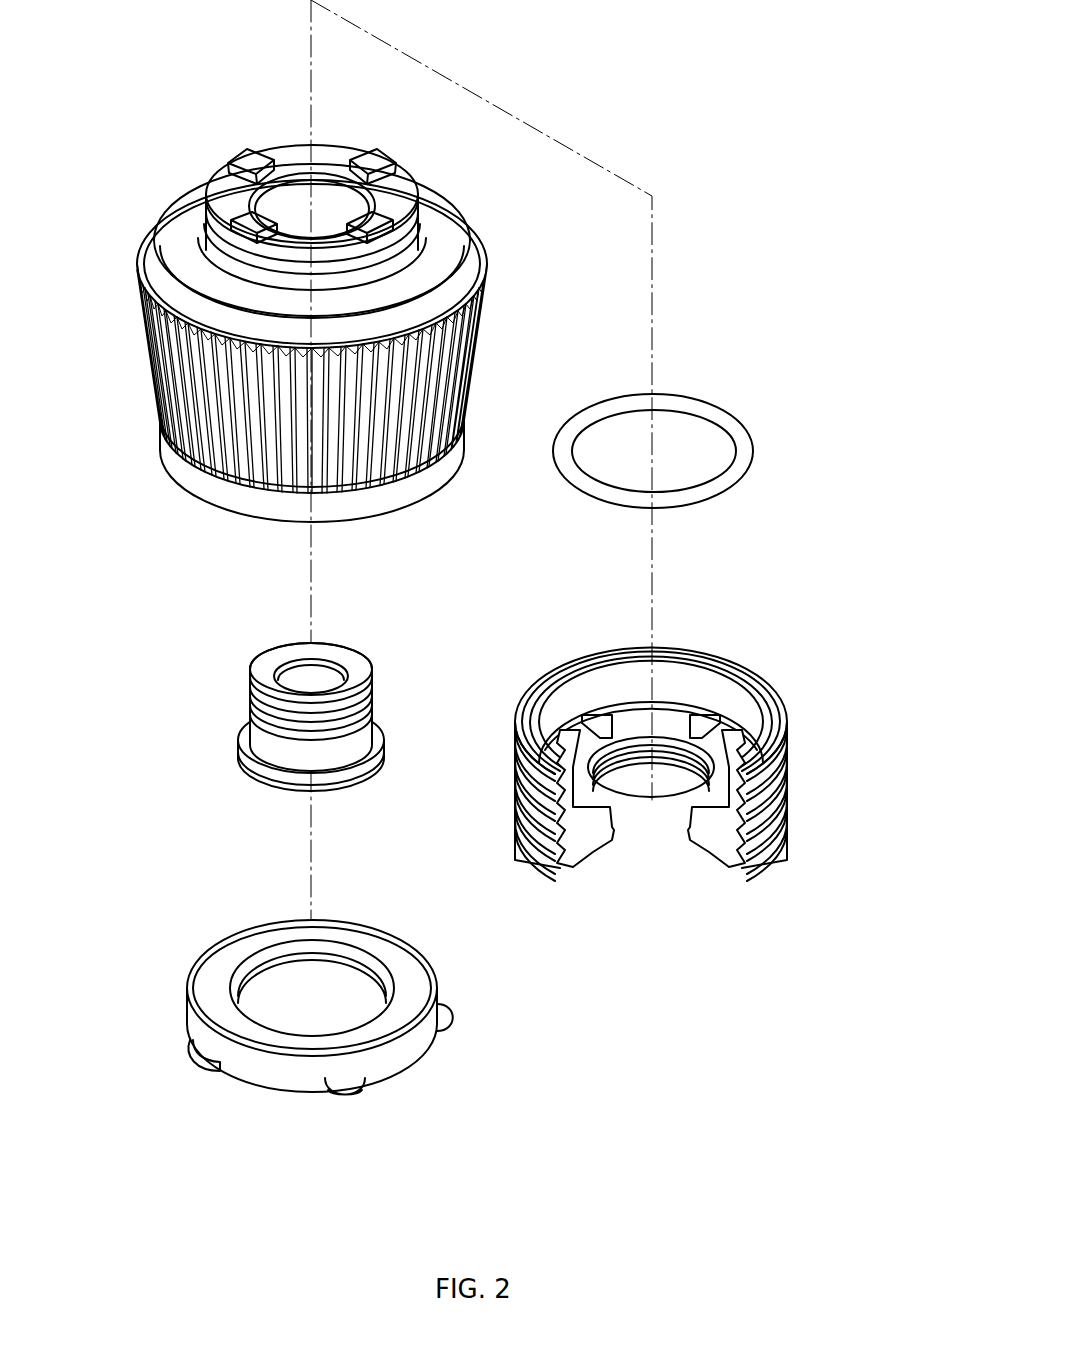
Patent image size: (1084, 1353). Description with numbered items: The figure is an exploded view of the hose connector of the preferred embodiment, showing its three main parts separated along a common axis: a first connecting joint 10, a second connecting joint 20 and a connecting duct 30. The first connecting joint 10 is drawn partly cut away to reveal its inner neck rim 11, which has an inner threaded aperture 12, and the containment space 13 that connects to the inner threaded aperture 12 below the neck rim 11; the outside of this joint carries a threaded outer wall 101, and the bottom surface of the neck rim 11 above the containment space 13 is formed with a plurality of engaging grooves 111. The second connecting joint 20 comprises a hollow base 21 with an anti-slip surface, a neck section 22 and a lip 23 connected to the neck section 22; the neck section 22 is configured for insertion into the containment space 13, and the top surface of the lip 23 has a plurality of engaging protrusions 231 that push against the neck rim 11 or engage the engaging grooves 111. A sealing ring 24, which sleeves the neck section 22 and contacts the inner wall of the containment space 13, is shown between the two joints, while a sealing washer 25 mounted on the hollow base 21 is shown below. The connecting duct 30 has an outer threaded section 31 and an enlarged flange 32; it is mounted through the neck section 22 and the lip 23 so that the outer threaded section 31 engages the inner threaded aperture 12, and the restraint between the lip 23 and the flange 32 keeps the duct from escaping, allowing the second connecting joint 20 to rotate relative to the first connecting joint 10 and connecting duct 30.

The first connecting joint 10 is at (795, 797).
The threaded outer wall 101 is at (533, 800).
The inner neck rim 11 is at (678, 713).
The engaging grooves 111 is at (593, 726).
The inner threaded aperture 12 is at (708, 856).
The containment space 13 is at (612, 688).
The second connecting joint 20 is at (447, 483).
The hollow base 21 is at (188, 470).
The neck section 22 is at (422, 250).
The lip 23 is at (240, 204).
The engaging protrusions 231 is at (243, 150).
The sealing ring 24 is at (708, 412).
The sealing washer 25 is at (248, 1074).
The connecting duct 30 is at (264, 647).
The outer threaded section 31 is at (374, 720).
The enlarged flange 32 is at (252, 775).